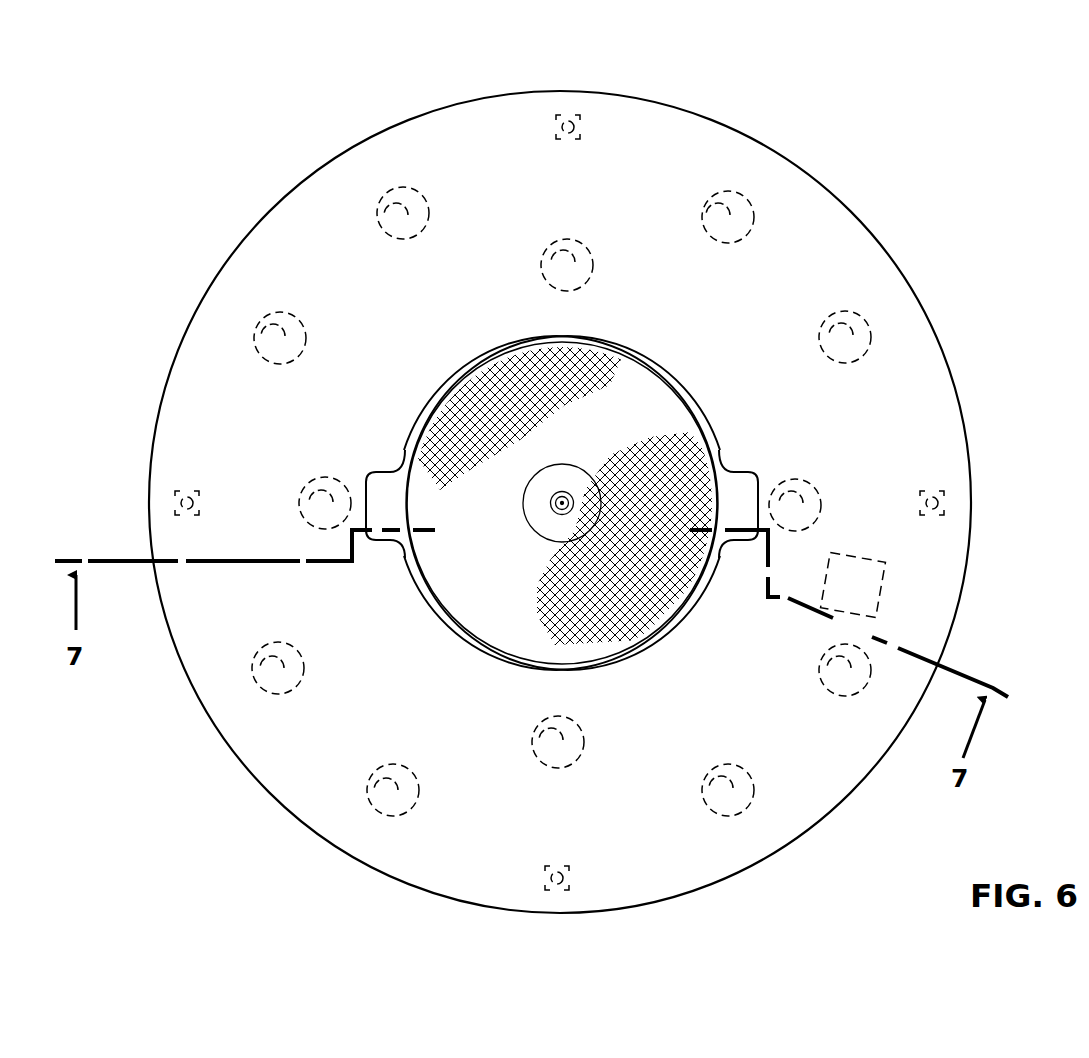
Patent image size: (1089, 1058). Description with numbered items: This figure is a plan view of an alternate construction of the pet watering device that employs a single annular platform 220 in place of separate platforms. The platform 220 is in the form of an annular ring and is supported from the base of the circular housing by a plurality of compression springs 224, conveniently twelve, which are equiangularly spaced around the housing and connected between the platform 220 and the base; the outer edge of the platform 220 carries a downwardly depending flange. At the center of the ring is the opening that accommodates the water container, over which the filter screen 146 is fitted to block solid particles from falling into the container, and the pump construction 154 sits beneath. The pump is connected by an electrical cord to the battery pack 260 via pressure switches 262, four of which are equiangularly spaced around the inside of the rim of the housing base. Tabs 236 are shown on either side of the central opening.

The filter screen 146 is at (615, 475).
The pump construction element 154 is at (556, 508).
The single platform 220 is at (257, 262).
The compression springs 224 is at (383, 200).
The tabs 236 is at (370, 482).
The battery pack 260 is at (884, 583).
The pressure switches 262 is at (553, 125).